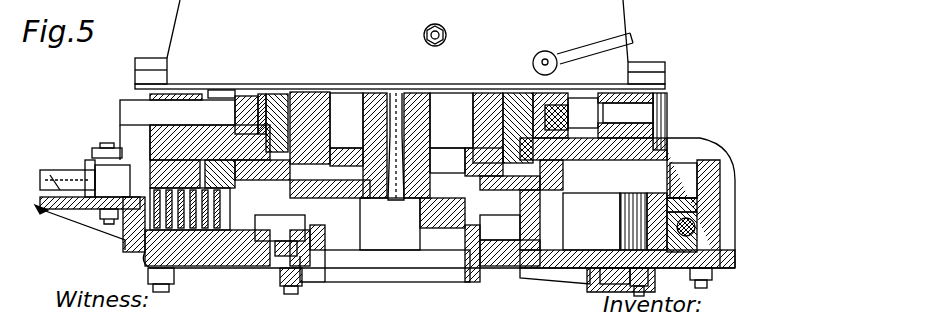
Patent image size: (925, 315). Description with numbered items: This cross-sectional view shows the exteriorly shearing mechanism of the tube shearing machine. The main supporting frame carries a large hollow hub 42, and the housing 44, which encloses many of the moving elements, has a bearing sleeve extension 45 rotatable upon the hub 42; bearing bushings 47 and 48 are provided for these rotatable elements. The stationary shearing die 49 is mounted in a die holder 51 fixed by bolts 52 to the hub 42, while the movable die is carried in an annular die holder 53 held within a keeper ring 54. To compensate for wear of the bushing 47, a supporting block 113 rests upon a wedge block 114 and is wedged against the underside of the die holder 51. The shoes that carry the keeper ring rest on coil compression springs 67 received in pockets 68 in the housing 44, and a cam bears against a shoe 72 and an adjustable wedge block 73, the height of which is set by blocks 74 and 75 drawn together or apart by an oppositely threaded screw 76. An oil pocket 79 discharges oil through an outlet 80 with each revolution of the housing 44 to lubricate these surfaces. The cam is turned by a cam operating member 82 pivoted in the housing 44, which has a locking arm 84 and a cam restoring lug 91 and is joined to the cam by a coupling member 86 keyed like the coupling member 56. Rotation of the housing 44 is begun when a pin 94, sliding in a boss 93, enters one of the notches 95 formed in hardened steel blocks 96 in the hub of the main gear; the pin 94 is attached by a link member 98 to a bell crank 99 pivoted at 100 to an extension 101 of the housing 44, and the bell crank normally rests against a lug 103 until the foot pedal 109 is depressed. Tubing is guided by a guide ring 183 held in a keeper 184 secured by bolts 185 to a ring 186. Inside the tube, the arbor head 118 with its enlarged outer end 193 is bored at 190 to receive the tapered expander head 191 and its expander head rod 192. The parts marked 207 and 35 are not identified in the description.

The frame 207 is at (518, 0).
The foot pedal 109 is at (632, 40).
The pin 94 is at (150, 108).
The boss 93 is at (185, 94).
The notches 95 is at (176, 114).
The hardened steel blocks 96 is at (232, 114).
The bearing bushing 48 is at (262, 96).
The bearing bushing 47 is at (287, 92).
The hollow hub 42 is at (310, 92).
The supporting block 113 is at (205, 165).
The wedge block 114 is at (210, 178).
The coil compression springs 67 is at (205, 230).
The pockets 68 is at (165, 268).
The extension 101 is at (72, 240).
The pivot 100 is at (112, 222).
The link member 98 is at (118, 148).
The bell crank member 99 is at (85, 175).
The lug 103 is at (58, 175).
The keeper ring 54 is at (280, 228).
The annular die holder 53 is at (286, 238).
The ring 186 is at (283, 275).
The bolts 185 is at (295, 292).
The arbor head 118 is at (363, 106).
The outer end 193 is at (363, 135).
The exteriorly shearing die 49 is at (352, 158).
The bolts 52 is at (390, 171).
The expander head rod 192 is at (425, 103).
The spindle 35 is at (452, 120).
The bore 190 is at (430, 135).
The expander head 191 is at (447, 160).
The bearing sleeve extension 45 is at (518, 93).
The guide ring 183 is at (335, 255).
The keeper 184 is at (315, 275).
The die holder 51 is at (500, 227).
The coupling member 56 is at (521, 220).
The cam restoring lug 91 is at (585, 98).
The cam operating member 82 is at (662, 130).
The housing 44 is at (730, 175).
The locking arm 84 is at (575, 190).
The coupling member 86 is at (628, 218).
The block 74 is at (700, 203).
The block 75 is at (700, 218).
The screw 76 is at (690, 227).
The adjustable wedge block 73 is at (700, 240).
The shoe 72 is at (560, 282).
The oil pocket 79 is at (600, 295).
The outlet 80 is at (687, 283).